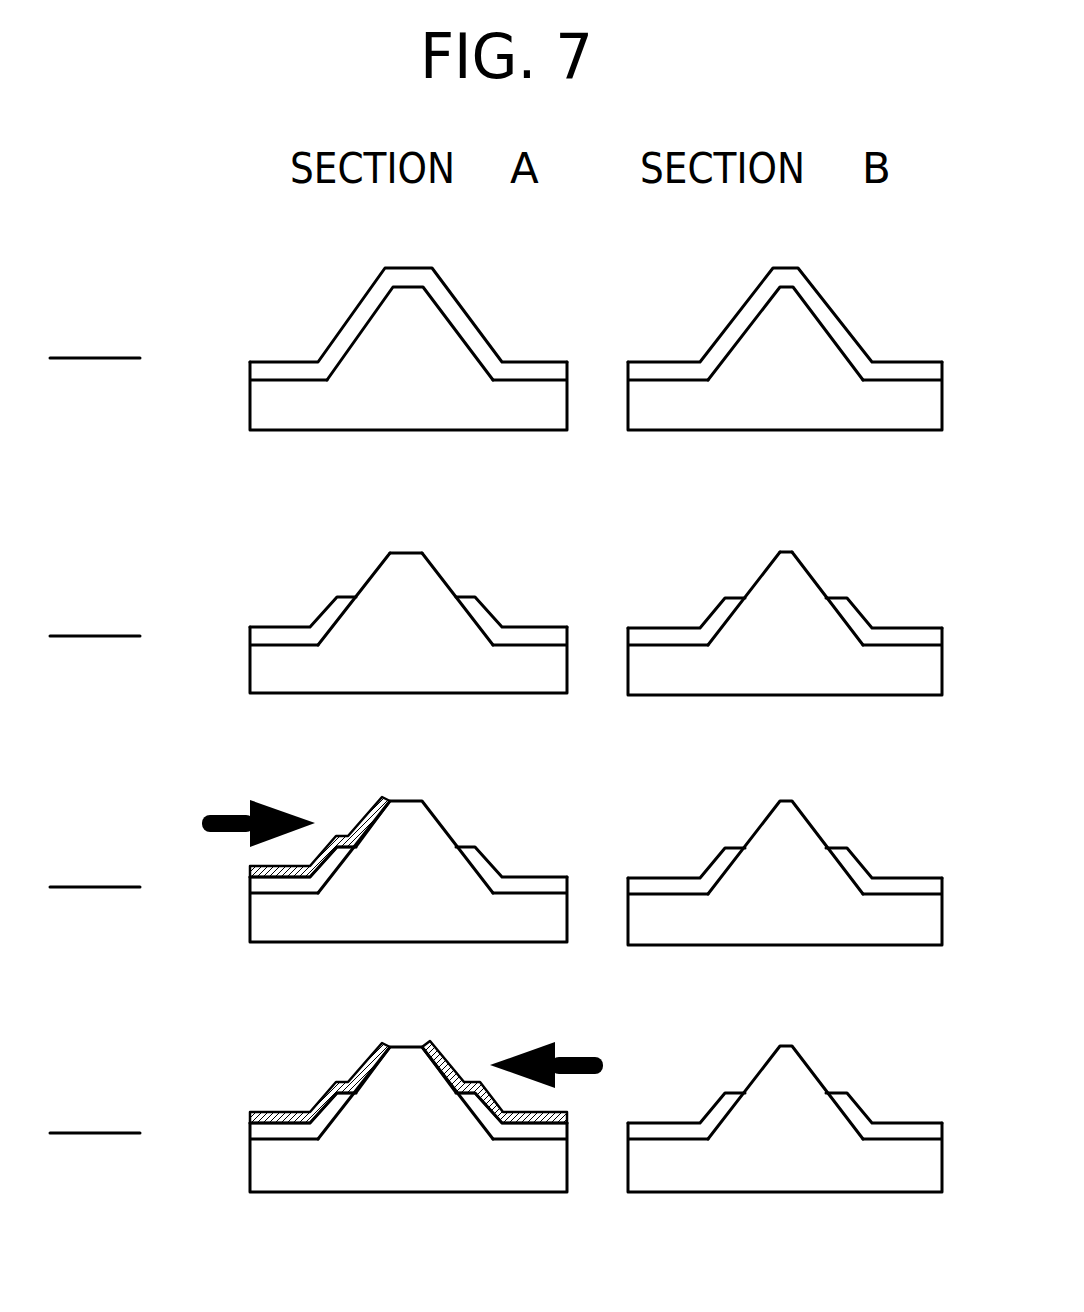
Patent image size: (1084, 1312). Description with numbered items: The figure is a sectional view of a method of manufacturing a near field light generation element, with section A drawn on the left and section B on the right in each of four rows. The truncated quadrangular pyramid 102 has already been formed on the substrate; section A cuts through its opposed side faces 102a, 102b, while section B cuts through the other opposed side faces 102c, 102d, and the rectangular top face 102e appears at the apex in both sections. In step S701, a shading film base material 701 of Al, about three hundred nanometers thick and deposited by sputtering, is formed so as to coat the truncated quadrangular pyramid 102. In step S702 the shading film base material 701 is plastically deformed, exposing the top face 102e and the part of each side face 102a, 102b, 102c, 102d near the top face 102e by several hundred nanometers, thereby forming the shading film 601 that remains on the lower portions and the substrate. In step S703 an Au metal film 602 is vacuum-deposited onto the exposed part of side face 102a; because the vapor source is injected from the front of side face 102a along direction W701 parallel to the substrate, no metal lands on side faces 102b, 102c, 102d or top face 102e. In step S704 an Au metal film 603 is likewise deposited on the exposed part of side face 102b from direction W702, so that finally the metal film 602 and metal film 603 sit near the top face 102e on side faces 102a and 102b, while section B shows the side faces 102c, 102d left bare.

The truncated quadrangular pyramid 102 is at (412, 338).
The side face 102a is at (367, 577).
The side face 102b is at (438, 580).
The side face 102c is at (757, 580).
The side face 102d is at (800, 568).
The top face 102e is at (407, 552).
The shading film 601 is at (297, 638).
The metal film 602 is at (370, 812).
The metal film 603 is at (440, 1060).
The shading film base material 701 is at (358, 317).
The deposition direction W701 is at (232, 807).
The deposition direction W702 is at (573, 1046).
The step S701 is at (95, 336).
The step S702 is at (95, 614).
The step S703 is at (95, 865).
The step S704 is at (95, 1111).